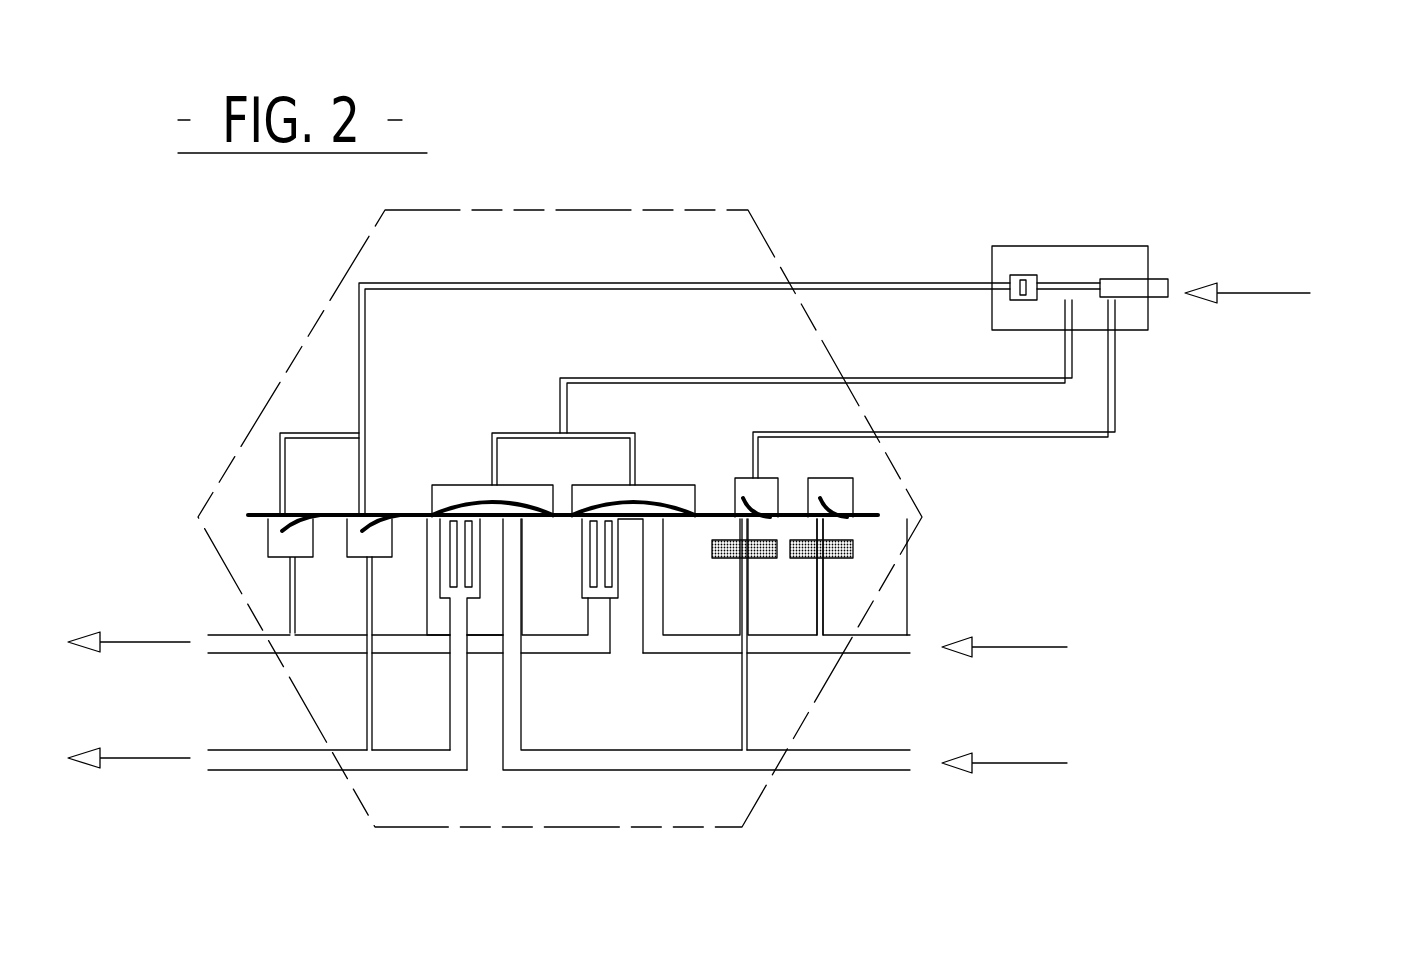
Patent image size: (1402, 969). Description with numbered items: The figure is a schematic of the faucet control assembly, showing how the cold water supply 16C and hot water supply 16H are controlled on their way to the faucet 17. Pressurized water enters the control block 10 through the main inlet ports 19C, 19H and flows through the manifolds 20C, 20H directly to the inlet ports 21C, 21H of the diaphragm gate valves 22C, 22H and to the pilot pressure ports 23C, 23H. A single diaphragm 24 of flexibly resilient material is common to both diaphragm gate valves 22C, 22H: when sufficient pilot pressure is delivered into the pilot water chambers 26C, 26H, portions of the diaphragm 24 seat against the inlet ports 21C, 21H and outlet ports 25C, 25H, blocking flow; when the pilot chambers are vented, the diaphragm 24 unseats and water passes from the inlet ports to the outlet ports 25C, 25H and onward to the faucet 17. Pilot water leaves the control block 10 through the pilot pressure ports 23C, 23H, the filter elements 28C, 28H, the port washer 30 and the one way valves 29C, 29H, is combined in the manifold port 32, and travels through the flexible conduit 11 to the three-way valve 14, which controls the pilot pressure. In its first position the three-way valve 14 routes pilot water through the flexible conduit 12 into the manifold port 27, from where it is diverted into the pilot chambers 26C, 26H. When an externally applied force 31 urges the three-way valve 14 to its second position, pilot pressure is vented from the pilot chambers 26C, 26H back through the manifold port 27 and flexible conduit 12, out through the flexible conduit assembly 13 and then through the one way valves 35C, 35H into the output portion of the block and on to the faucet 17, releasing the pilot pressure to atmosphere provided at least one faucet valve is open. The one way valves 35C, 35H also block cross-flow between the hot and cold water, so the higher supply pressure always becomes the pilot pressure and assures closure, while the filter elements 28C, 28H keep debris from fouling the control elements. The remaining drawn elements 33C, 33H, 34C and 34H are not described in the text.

The control block 10 is at (568, 210).
The flexible conduit 11 is at (990, 440).
The flexible conduit 12 is at (850, 378).
The flexible conduit assembly 13 is at (812, 283).
The three-way valve 14 is at (1133, 246).
The cold water supply 16C is at (1017, 647).
The hot water supply 16H is at (1020, 763).
The faucet 17 is at (126, 700).
The main inlet port 19C is at (910, 650).
The main inlet port 19H is at (910, 768).
The manifold 20C is at (760, 653).
The manifold 20H is at (578, 772).
The inlet port 21C is at (667, 527).
The inlet port 21H is at (533, 522).
The diaphragm gate valve 22C is at (703, 512).
The diaphragm gate valve 22H is at (432, 513).
The pilot pressure port 23C is at (827, 583).
The pilot pressure port 23H is at (742, 677).
The diaphragm 24 is at (850, 513).
The outlet port 25C is at (623, 527).
The outlet port 25H is at (437, 528).
The pilot water chamber 26C is at (657, 493).
The pilot water chamber 26H is at (447, 492).
The manifold port 27 is at (563, 433).
The filter element 28C is at (853, 548).
The filter element 28H is at (757, 562).
The one way valve 29C is at (843, 500).
The one way valve 29H is at (753, 498).
The port washer 30 is at (797, 433).
The one way valve 31 is at (1260, 293).
The manifold port 32 is at (340, 432).
The cold valve 33C is at (283, 530).
The hot valve 33H is at (364, 530).
The cold passage 34C is at (378, 653).
The hot outlet pipe 34H is at (403, 772).
The one way valve 35C is at (207, 648).
The one way valve 35H is at (207, 765).